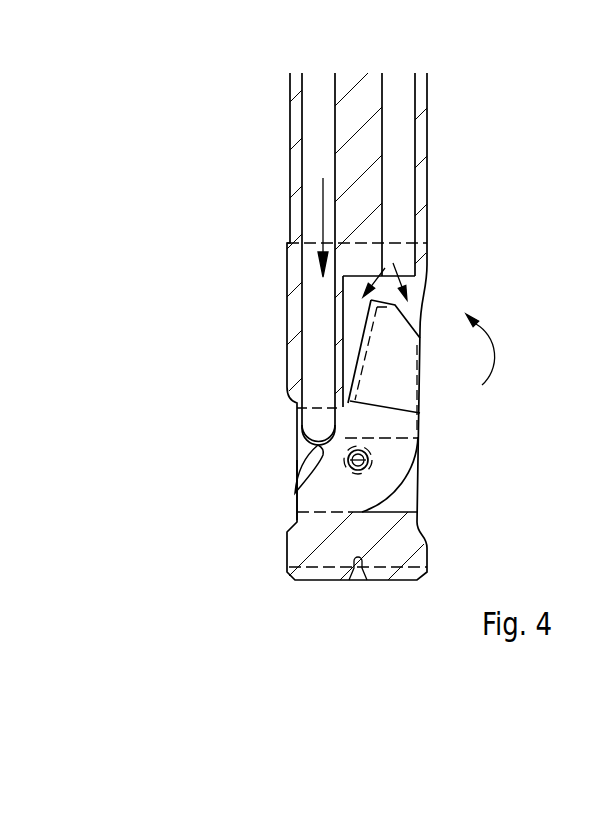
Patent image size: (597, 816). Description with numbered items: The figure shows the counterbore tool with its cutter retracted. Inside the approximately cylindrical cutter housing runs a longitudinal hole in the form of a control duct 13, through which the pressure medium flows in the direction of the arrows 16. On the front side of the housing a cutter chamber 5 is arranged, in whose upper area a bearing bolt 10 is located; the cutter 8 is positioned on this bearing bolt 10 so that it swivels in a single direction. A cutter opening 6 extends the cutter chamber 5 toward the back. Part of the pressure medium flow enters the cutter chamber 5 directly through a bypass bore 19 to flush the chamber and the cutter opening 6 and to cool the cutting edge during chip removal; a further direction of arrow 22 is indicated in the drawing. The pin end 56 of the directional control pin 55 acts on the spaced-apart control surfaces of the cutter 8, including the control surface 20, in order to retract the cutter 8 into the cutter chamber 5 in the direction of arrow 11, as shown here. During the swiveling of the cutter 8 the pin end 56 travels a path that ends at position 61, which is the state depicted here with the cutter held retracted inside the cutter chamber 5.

The control duct 13 is at (295, 102).
The directional control pin 55 is at (317, 157).
The direction of arrow 16 is at (323, 213).
The bypass bore 19 is at (398, 182).
The direction of arrow 22 is at (385, 268).
The cutter chamber 5 is at (357, 310).
The direction of arrow 11 is at (495, 355).
The cutter 8 is at (446, 410).
The control surface 20 is at (320, 446).
The cutter opening 6 is at (302, 456).
The pin end 56 is at (300, 484).
The position 61 is at (286, 504).
The bearing bolt 10 is at (345, 467).